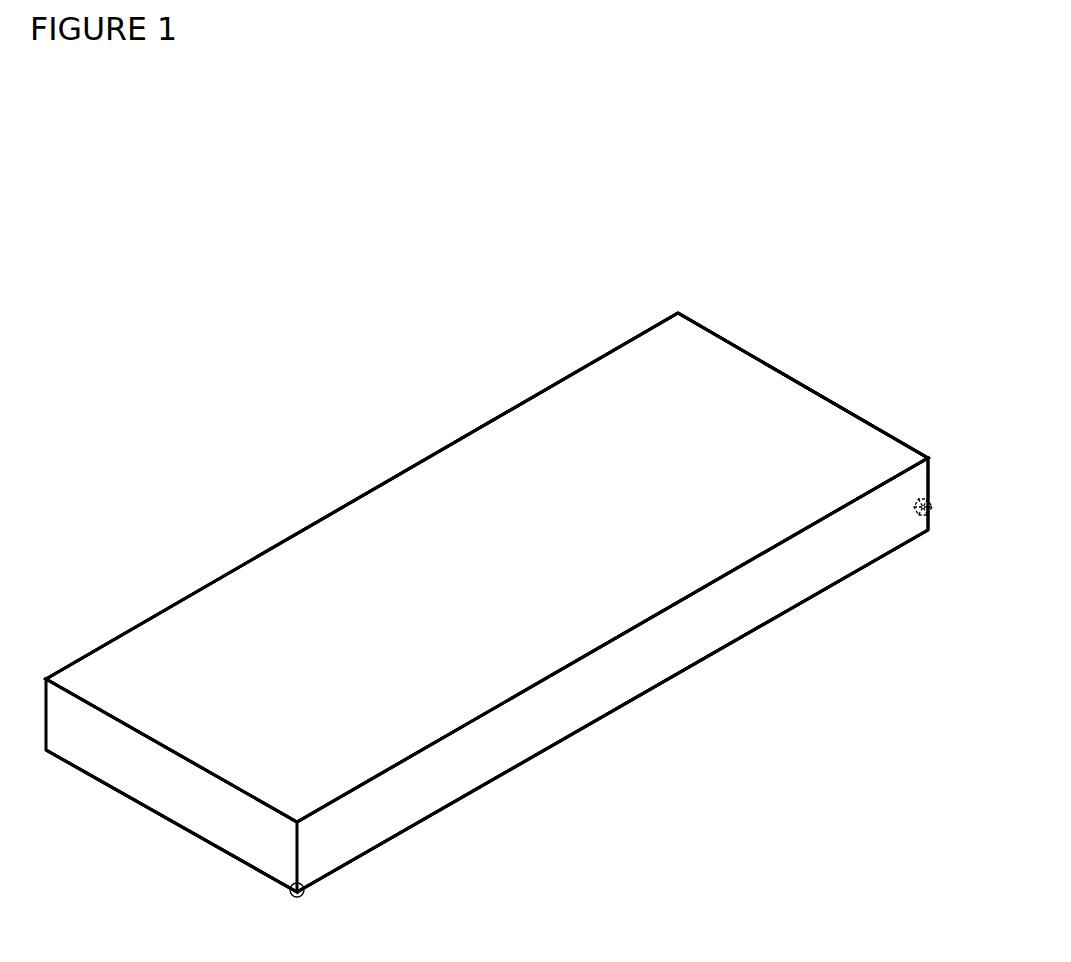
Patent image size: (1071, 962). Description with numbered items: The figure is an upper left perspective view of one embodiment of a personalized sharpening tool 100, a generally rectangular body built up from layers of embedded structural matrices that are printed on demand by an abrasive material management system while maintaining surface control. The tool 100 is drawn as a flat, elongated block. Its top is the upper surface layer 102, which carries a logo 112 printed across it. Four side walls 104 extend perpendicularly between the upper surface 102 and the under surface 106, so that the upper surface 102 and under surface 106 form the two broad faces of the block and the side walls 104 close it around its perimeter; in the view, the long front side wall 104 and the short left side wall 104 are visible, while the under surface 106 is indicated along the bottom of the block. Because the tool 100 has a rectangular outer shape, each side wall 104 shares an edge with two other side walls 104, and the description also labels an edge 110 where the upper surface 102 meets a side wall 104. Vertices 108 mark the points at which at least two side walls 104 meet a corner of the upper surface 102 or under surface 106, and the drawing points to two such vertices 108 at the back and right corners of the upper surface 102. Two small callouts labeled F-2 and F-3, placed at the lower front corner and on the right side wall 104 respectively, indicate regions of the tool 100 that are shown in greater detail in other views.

The sharpening tool 100 is at (773, 239).
The upper surface layer 102 is at (533, 427).
The side walls 104 is at (745, 352).
The under surface 106 is at (515, 793).
The vertices 108 is at (678, 312).
The top edge 110 is at (203, 589).
The logo 112 is at (388, 587).
The detail view reference FIG. 2 F-2 is at (290, 893).
The detail view reference FIG. 3 F-3 is at (931, 516).